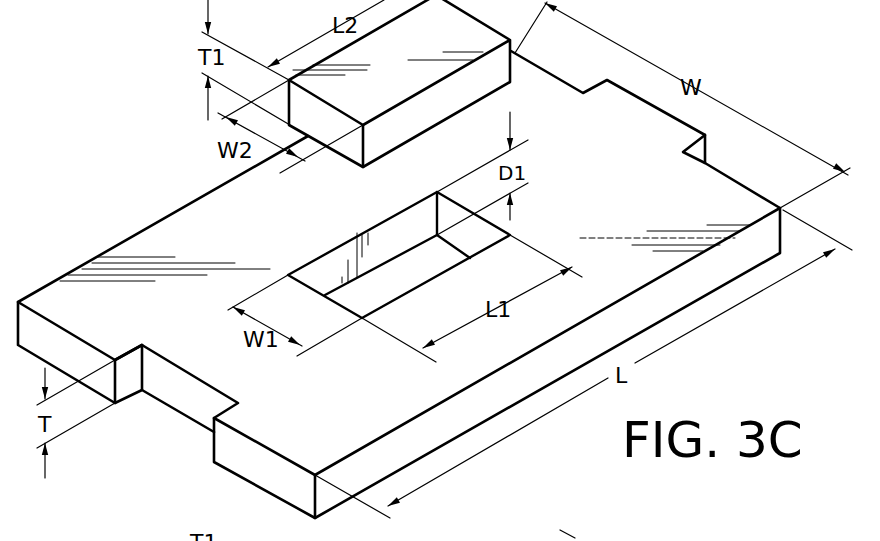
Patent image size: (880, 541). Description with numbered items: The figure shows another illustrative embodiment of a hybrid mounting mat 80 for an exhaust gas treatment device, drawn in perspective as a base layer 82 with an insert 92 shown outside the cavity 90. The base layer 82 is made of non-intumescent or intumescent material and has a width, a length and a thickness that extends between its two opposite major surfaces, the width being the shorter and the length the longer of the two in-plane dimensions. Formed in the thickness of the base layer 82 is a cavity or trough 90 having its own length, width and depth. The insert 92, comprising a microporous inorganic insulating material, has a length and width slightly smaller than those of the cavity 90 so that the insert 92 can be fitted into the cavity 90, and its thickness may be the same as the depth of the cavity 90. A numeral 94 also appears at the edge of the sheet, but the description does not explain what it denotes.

The mounting mat 80 is at (150, 81).
The base layer 82 is at (163, 320).
The cavity 90 is at (423, 257).
The insert 92 is at (442, 45).
The notch 94 is at (571, 535).